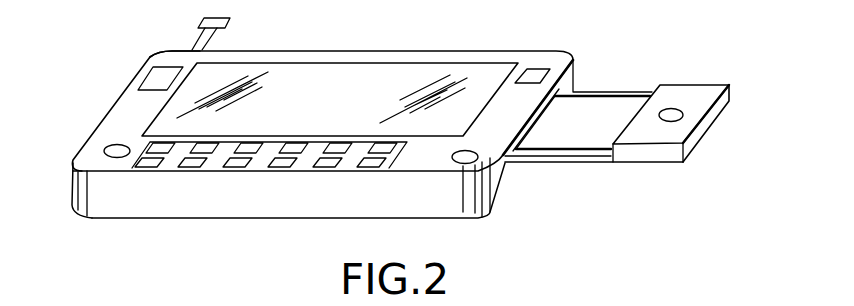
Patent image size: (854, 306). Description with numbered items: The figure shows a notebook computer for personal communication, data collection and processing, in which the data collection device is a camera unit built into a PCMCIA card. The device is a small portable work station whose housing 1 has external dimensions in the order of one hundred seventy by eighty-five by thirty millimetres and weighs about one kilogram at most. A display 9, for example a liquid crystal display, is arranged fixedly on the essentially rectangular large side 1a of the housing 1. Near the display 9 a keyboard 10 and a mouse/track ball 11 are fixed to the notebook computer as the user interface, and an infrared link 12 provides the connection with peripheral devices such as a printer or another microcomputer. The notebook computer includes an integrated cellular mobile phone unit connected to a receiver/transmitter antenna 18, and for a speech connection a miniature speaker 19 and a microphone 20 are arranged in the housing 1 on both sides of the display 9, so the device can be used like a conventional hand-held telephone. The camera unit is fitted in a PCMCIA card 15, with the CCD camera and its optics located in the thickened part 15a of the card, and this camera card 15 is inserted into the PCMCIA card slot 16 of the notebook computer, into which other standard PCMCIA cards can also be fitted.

The housing 1 is at (96, 118).
The large side 1a is at (167, 55).
The display 9 is at (430, 72).
The keyboard 10 is at (276, 123).
The mouse/track ball 11 is at (465, 163).
The infrared link 12 is at (117, 150).
The PCMCIA card 15 is at (617, 125).
The thickened part of the card 15a is at (672, 110).
The PCMCIA card slot 16 is at (505, 163).
The receiver/transmitter antenna 18 is at (197, 43).
The miniature speaker 19 is at (152, 80).
The microphone 20 is at (533, 72).